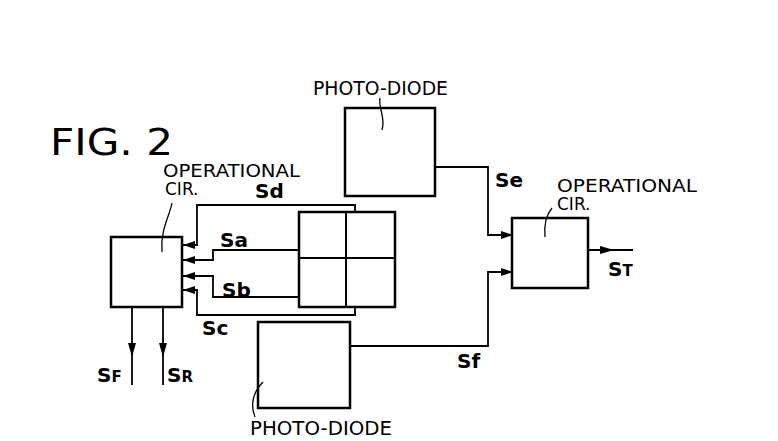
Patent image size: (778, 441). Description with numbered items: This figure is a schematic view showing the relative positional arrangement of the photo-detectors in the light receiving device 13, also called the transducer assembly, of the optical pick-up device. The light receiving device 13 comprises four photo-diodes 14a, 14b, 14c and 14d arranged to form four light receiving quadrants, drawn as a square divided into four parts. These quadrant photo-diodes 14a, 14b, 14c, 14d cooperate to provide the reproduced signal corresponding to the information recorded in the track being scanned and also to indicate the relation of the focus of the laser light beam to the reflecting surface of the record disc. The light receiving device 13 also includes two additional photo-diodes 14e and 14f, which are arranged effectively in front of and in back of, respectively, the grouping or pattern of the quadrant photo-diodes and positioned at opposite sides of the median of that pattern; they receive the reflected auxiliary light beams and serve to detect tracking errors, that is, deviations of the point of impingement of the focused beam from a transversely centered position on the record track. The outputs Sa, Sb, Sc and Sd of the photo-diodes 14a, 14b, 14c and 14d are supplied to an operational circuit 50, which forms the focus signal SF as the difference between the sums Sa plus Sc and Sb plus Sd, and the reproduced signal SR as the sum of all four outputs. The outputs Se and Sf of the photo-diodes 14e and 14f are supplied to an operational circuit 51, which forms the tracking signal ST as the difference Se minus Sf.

The light receiving device 13 is at (247, 128).
The photo-diode 14a is at (338, 243).
The photo-diode 14b is at (338, 288).
The photo-diode 14c is at (382, 270).
The photo-diode 14d is at (388, 222).
The photo-diode 14e is at (432, 128).
The photo-diode 14f is at (348, 387).
The operational circuit 50 is at (140, 240).
The operational circuit 51 is at (553, 288).